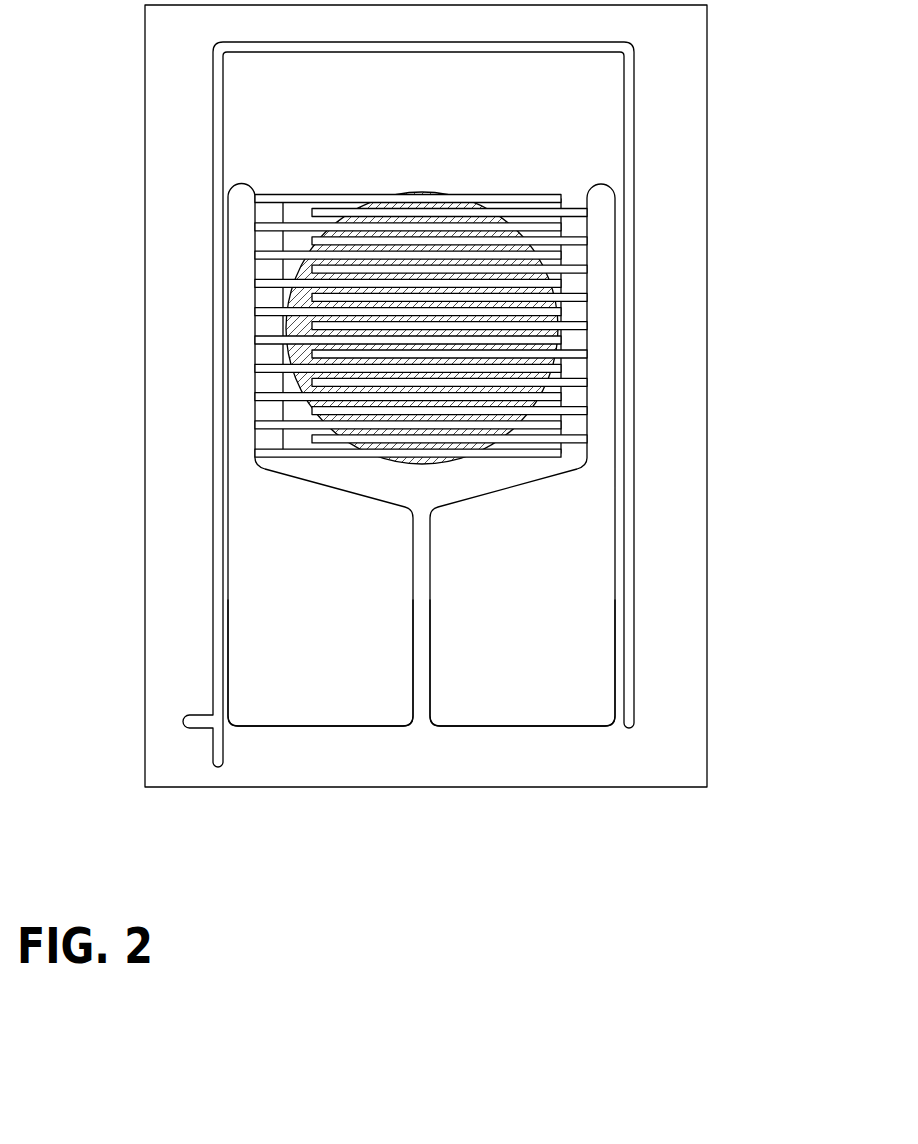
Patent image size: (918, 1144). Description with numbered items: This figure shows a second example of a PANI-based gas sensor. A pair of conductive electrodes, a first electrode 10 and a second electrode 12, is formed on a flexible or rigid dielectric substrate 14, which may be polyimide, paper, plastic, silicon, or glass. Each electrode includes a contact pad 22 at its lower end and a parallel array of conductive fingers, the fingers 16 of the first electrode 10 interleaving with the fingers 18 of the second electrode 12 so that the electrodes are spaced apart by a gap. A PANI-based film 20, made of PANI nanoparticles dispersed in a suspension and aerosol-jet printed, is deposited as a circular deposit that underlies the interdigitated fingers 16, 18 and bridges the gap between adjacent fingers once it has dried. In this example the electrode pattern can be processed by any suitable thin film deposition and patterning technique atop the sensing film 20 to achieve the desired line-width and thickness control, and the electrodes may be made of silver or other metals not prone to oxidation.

The first electrode 10 is at (263, 542).
The second electrode 12 is at (570, 556).
The dielectric substrate 14 is at (707, 680).
The fingers of the first electrode 16 is at (273, 225).
The fingers of the second electrode 18 is at (573, 240).
The PANI-based film 20 is at (555, 392).
The contact pad 22 is at (323, 630).